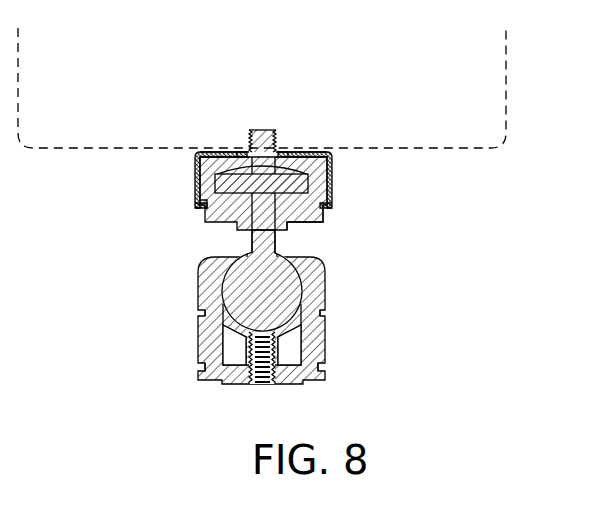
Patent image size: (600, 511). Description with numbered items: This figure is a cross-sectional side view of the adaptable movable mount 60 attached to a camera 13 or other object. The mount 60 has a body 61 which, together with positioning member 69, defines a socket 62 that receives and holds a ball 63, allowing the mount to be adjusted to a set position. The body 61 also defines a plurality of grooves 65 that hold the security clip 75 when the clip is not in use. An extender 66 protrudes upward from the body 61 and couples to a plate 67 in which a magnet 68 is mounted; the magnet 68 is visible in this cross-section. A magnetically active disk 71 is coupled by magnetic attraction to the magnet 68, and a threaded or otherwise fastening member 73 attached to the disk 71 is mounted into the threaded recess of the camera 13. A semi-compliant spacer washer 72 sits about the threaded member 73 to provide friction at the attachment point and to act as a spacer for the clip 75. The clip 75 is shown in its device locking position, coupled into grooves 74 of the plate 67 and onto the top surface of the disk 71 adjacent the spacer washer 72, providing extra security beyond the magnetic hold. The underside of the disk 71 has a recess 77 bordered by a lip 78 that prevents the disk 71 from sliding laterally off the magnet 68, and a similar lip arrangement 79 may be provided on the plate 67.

The camera 13 is at (466, 97).
The adaptable movable mount 60 is at (185, 343).
The body 61 is at (277, 342).
The socket 62 is at (304, 280).
The ball 63 is at (245, 277).
The grooves 65 is at (203, 313).
The extender 66 is at (291, 231).
The plate 67 is at (323, 219).
The magnet 68 is at (272, 182).
The positioning member 69 is at (290, 383).
The magnetically active disk 71 is at (275, 151).
The spacer washer 72 is at (285, 152).
The threaded member 73 is at (249, 139).
The grooves 74 is at (200, 207).
The security clip 75 is at (306, 196).
The recess 77 is at (265, 168).
The lip 78 is at (198, 172).
The lip arrangement 79 is at (328, 181).